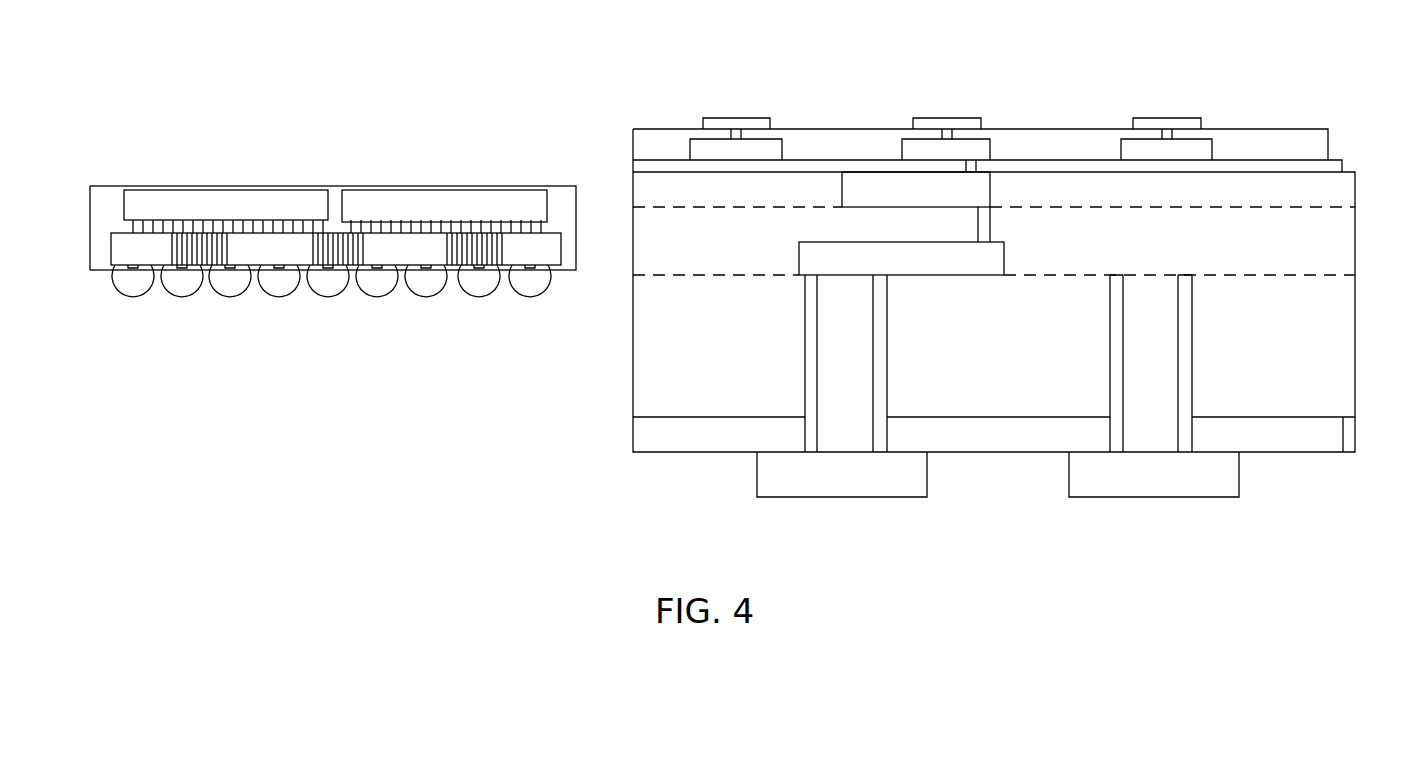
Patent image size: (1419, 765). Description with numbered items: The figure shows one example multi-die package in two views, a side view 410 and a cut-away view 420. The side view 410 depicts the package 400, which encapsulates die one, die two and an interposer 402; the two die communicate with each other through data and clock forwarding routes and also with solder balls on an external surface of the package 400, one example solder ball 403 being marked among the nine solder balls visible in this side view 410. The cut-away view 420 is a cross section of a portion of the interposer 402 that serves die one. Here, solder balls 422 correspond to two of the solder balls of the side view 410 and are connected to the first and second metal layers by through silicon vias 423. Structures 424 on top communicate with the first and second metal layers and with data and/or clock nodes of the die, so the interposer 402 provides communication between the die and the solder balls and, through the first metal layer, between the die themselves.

The package 400 is at (257, 163).
The interposer 402 is at (253, 258).
The solder ball 403 is at (531, 306).
The side view 410 is at (353, 361).
The cut-away view 420 is at (965, 545).
The solder balls 422 is at (840, 506).
The through silicon vias 423 is at (896, 388).
The structures 424 is at (745, 100).